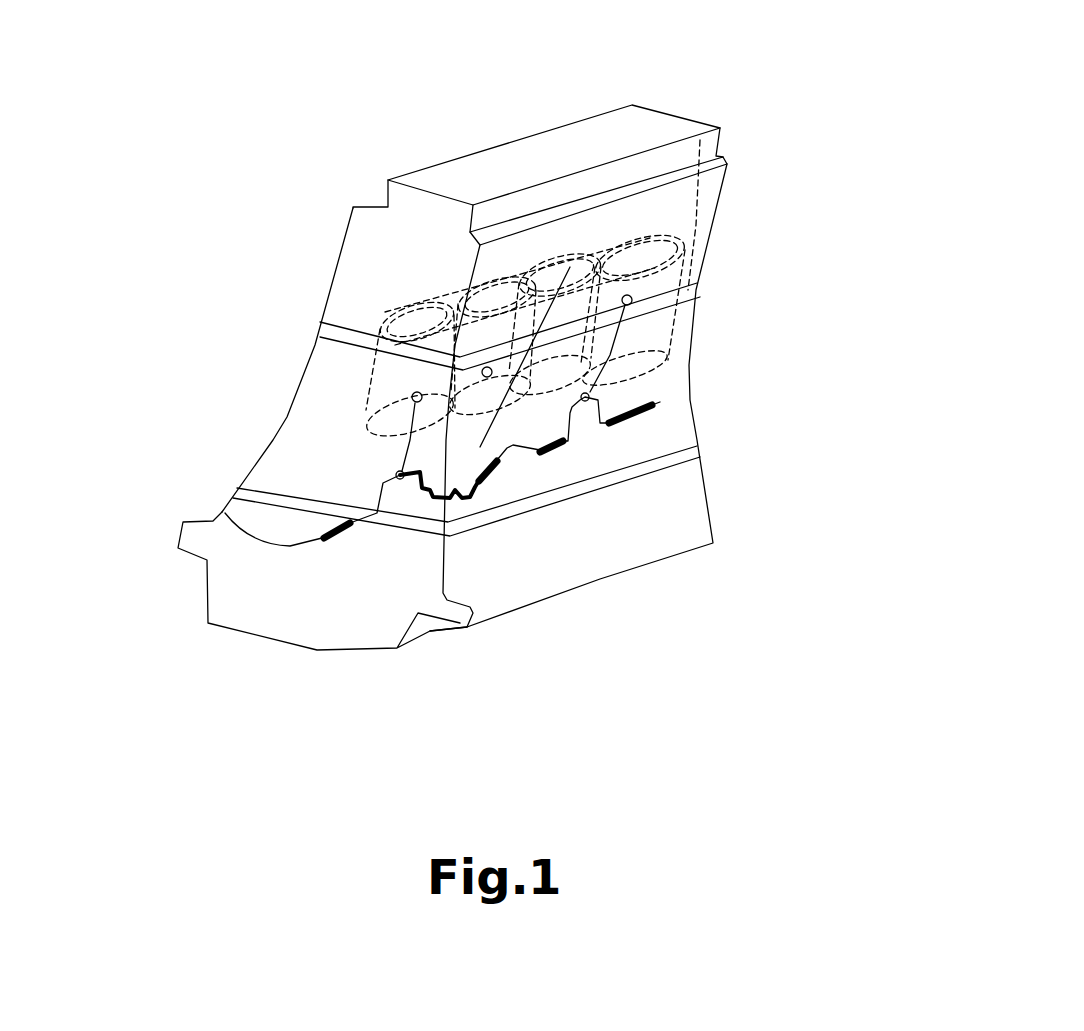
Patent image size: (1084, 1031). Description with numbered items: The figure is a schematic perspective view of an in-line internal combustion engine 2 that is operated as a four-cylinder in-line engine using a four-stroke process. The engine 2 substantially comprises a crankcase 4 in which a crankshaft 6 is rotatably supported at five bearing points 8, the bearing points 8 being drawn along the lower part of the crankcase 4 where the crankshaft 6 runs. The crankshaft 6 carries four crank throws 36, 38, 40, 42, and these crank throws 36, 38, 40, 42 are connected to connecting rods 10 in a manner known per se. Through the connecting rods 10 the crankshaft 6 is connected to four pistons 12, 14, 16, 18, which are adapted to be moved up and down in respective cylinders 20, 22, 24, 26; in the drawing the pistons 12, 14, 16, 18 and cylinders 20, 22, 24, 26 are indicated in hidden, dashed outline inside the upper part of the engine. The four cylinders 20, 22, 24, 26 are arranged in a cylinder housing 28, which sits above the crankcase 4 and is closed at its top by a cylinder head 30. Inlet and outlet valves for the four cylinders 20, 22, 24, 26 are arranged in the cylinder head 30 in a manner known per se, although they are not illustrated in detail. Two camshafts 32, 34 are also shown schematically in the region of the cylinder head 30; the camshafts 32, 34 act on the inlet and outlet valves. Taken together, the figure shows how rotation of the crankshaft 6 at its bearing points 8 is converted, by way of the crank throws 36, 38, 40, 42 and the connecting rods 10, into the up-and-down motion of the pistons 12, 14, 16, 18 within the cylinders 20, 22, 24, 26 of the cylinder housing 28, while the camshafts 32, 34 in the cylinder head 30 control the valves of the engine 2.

The in-line internal combustion engine 2 is at (742, 240).
The crankcase 4 is at (280, 607).
The crankshaft 6 is at (225, 513).
The bearing points 8 is at (337, 537).
The connecting rods 10 is at (340, 467).
The piston 12 is at (383, 306).
The piston 14 is at (500, 279).
The piston 16 is at (560, 247).
The piston 18 is at (653, 243).
The cylinder 20 is at (343, 327).
The cylinder 22 is at (452, 300).
The cylinder 24 is at (475, 212).
The cylinder 26 is at (558, 253).
The cylinder housing 28 is at (323, 418).
The cylinder head 30 is at (663, 128).
The camshaft 32 is at (710, 128).
The camshaft 34 is at (700, 230).
The crank throw 36 is at (405, 478).
The crank throw 38 is at (486, 378).
The crank throw 40 is at (538, 460).
The crank throw 42 is at (588, 407).